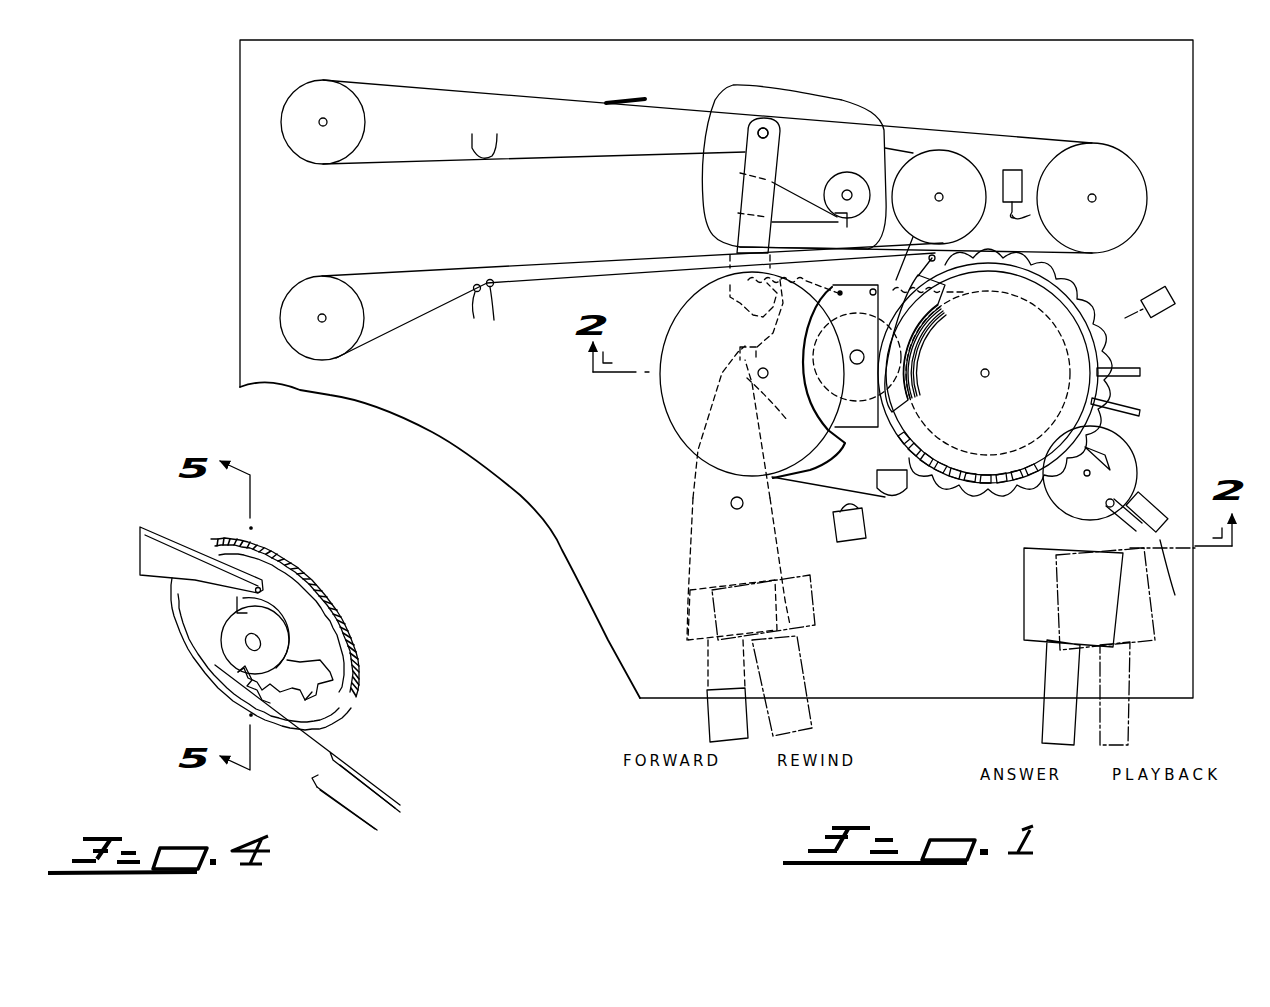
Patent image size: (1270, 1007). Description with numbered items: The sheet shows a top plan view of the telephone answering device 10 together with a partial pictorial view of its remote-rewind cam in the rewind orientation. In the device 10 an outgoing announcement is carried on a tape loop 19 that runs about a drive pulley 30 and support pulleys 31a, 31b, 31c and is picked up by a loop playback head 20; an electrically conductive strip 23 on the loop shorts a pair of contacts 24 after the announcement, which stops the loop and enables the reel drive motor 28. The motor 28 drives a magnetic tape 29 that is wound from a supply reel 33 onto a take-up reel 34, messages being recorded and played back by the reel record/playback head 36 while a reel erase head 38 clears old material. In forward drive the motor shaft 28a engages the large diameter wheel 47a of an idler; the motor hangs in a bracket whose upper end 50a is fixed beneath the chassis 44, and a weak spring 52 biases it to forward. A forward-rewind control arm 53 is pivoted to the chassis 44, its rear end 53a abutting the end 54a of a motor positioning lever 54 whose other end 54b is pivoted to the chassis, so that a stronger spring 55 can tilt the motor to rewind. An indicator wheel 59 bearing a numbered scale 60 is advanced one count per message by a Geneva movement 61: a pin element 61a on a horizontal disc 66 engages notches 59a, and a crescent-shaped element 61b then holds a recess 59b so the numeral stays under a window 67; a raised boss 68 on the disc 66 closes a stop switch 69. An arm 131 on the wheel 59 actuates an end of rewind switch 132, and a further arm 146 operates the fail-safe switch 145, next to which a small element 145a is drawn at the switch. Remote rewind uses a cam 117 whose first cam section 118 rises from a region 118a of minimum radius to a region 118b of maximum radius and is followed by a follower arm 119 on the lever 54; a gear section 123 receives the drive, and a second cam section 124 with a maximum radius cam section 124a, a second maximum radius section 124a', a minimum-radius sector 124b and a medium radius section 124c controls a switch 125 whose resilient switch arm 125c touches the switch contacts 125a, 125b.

In FIG. 1, the telephone answering device 10 is at (1204, 134).
In FIG. 1, the tape loop 19 is at (568, 100).
In FIG. 1, the loop playback head 20 is at (497, 143).
In FIG. 1, the electrically conductive strip 23 is at (632, 97).
In FIG. 1, the contacts 24 is at (486, 313).
In FIG. 1, the reel drive motor 28 is at (818, 420).
In FIG. 1, the motor shaft 28a is at (1017, 403).
In FIG. 1, the magnetic tape 29 is at (808, 480).
In FIG. 1, the drive pulley 30 is at (1100, 160).
In FIG. 1, the support pulley 31a is at (950, 160).
In FIG. 1, the support pulley 31b is at (350, 141).
In FIG. 1, the support pulley 31c is at (350, 312).
In FIG. 1, the supply reel 33 is at (678, 410).
In FIG. 1, the take-up reel 34 is at (905, 325).
In FIG. 1, the reel record/playback head 36 is at (895, 500).
In FIG. 1, the reel erase head 38 is at (848, 543).
In FIG. 1, the chassis 44 is at (562, 528).
In FIG. 1, the large diameter wheel 47a is at (870, 292).
In FIG. 1, the upper end of support bracket 50a is at (845, 443).
In FIG. 1, the spring 52 is at (968, 320).
In FIG. 1, the forward-rewind control arm 53 is at (718, 642).
In FIG. 1, the rear end of control arm 53a is at (774, 410).
In FIG. 1, the motor positioning lever 54 is at (768, 160).
In FIG. 1, the end of motor positioning lever 54a is at (722, 373).
In FIG. 1, the other end of motor positioning lever 54b is at (767, 130).
In FIG. 1, the spring 55 is at (728, 320).
In FIG. 1, the indicator wheel 59 is at (1008, 432).
In FIG. 1, the notches 59a is at (1110, 342).
In FIG. 1, the recess 59b is at (972, 510).
In FIG. 1, the numbered scale 60 is at (1004, 468).
In FIG. 1, the Geneva movement 61 is at (1130, 442).
In FIG. 1, the pin element 61a is at (1050, 498).
In FIG. 1, the crescent-shaped element 61b is at (1103, 472).
In FIG. 1, the horizontal disc 66 is at (1120, 458).
In FIG. 1, the window 67 is at (943, 416).
In FIG. 1, the raised boss 68 is at (1108, 508).
In FIG. 1, the stop switch 69 is at (1158, 546).
In FIG. 4, the cam 117 is at (206, 682).
In FIG. 1, the first cam section 118 is at (851, 178).
In FIG. 4, the first cam section 118 is at (266, 630).
In FIG. 4, the region of minimum radius 118a is at (238, 614).
In FIG. 4, the region of maximum radius 118b is at (262, 592).
In FIG. 1, the follower arm 119 is at (812, 215).
In FIG. 4, the follower arm 119 is at (235, 575).
In FIG. 4, the gear section 123 is at (354, 618).
In FIG. 4, the second cam section 124 is at (310, 662).
In FIG. 4, the maximum radius cam section 124a is at (225, 654).
In FIG. 4, the maximum radius cam section 124a' is at (345, 729).
In FIG. 4, the minimum-radius sector 124b is at (240, 680).
In FIG. 4, the medium radius section 124c is at (312, 692).
In FIG. 4, the switch 125 is at (303, 800).
In FIG. 4, the switch contact 125a is at (322, 800).
In FIG. 4, the switch contact 125b is at (355, 775).
In FIG. 4, the switch arm 125c is at (298, 733).
In FIG. 1, the arm 131 is at (1138, 372).
In FIG. 1, the end of rewind switch 132 is at (1157, 298).
In FIG. 1, the fail-safe switch 145 is at (1013, 168).
In FIG. 1, the switch lead 145a is at (1016, 217).
In FIG. 1, the arm 146 is at (1140, 406).